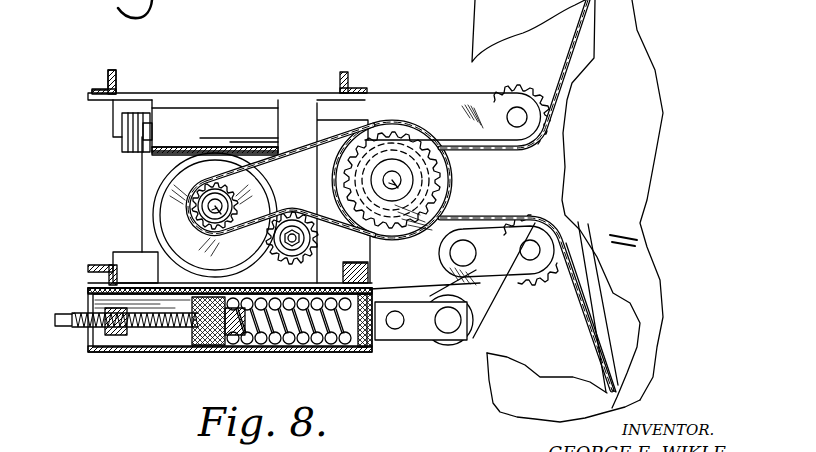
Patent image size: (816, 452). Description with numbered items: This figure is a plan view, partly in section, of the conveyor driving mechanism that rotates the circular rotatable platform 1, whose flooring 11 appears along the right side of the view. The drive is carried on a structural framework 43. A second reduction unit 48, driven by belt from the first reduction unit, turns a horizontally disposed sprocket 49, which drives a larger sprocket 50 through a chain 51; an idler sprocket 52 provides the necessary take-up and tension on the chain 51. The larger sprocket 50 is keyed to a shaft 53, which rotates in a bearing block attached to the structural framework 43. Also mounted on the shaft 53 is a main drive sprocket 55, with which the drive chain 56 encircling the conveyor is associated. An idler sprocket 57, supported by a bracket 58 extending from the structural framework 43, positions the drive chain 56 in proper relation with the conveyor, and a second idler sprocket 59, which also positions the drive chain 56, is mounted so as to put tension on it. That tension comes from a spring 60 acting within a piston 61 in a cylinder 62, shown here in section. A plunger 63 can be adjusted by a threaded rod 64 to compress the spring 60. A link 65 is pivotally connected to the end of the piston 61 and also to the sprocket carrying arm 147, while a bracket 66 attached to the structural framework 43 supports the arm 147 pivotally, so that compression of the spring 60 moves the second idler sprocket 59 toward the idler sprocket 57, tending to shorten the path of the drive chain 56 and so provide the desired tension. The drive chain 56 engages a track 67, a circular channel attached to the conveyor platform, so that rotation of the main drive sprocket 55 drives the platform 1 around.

The circular rotatable platform 1 is at (689, 90).
The flooring 11 is at (640, 32).
The structural framework 43 is at (115, 74).
The second reduction unit 48 is at (168, 225).
The horizontally disposed sprocket 49 is at (197, 201).
The larger sprocket 50 is at (401, 123).
The chain 51 is at (311, 140).
The idler sprocket 52 is at (275, 261).
The shaft 53 is at (390, 177).
The main drive sprocket 55 is at (437, 175).
The drive chain 56 is at (572, 42).
The idler sprocket 57 is at (522, 88).
The bracket 58 is at (460, 107).
The second idler sprocket 59 is at (528, 305).
The spring 60 is at (278, 353).
The piston 61 is at (376, 341).
The cylinder 62 is at (148, 355).
The plunger 63 is at (207, 353).
The threaded rod 64 is at (75, 332).
The link 65 is at (422, 333).
The bracket 66 is at (443, 233).
The track 67 is at (587, 270).
The sprocket carrying arm 147 is at (494, 310).